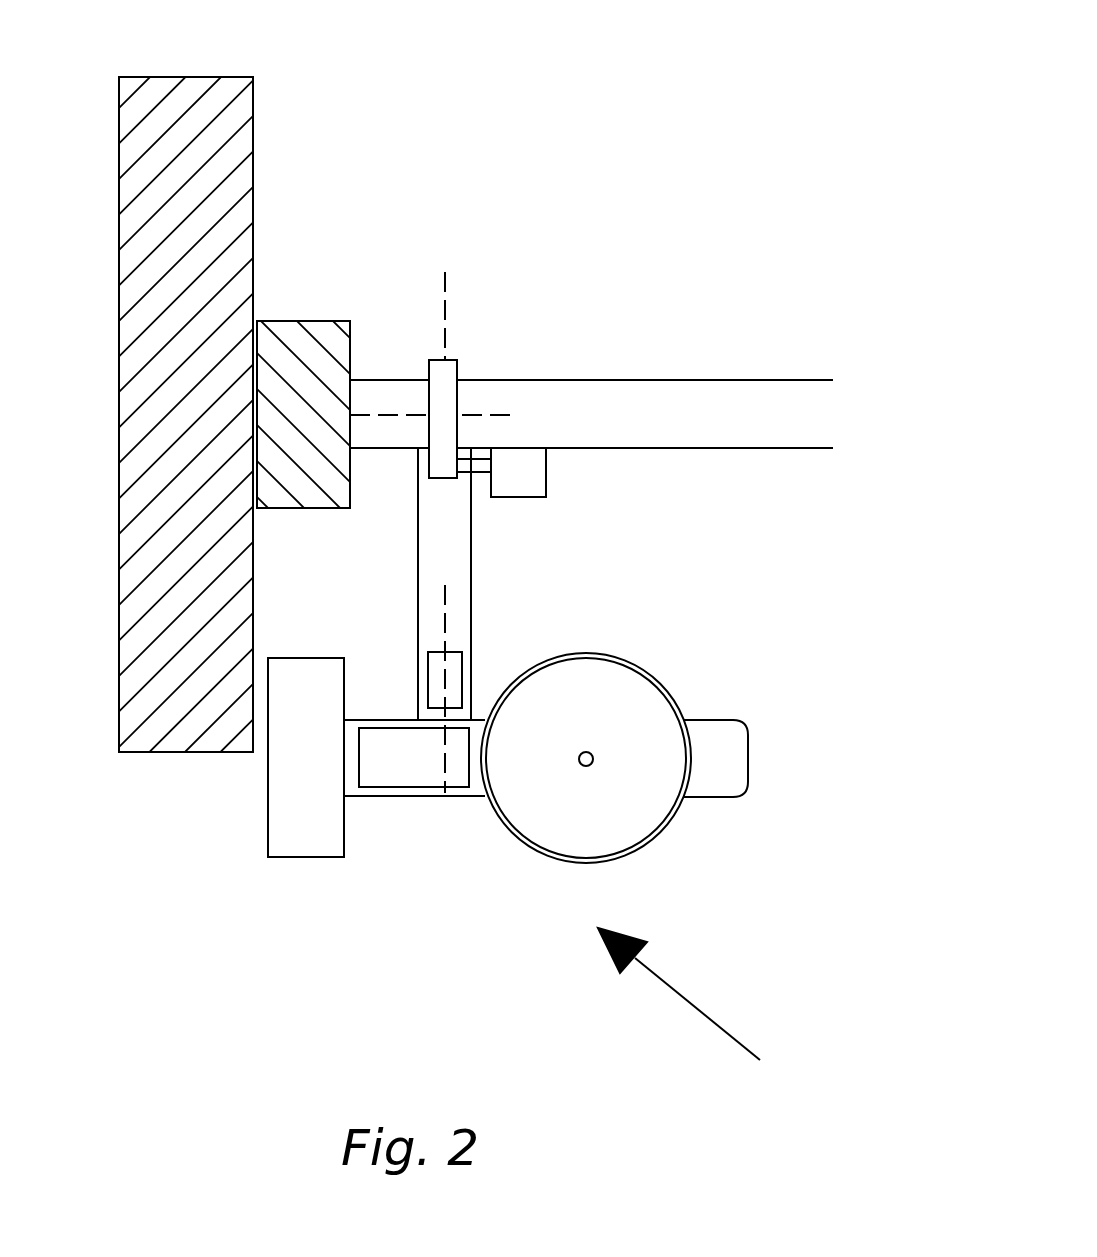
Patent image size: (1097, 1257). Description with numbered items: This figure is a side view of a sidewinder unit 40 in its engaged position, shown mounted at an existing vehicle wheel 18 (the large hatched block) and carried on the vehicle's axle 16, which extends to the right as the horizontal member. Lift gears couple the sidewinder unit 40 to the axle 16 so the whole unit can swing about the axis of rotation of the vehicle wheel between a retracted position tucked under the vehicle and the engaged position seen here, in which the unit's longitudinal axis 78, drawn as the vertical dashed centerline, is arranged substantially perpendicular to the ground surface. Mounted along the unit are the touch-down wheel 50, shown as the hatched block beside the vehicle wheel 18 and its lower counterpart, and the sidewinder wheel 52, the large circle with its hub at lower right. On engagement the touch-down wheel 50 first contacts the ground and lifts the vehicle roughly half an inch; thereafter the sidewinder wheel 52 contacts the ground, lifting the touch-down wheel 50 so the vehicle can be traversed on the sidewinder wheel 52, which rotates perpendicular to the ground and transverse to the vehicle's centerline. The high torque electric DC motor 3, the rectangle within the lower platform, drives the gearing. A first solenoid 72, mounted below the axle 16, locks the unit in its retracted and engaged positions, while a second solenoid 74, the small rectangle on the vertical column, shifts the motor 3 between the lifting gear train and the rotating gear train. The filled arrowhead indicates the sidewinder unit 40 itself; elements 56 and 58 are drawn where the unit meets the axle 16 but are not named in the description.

The existing vehicle wheel 18 is at (155, 125).
The axle 16 is at (666, 423).
The touch-down wheel 50 is at (299, 485).
The bore 56 is at (390, 415).
The pin 58 is at (450, 408).
The first solenoid 72 is at (550, 465).
The second solenoid 74 is at (459, 669).
The longitudinal axis 78 is at (447, 282).
The high torque electric DC motor 3 is at (418, 762).
The sidewinder wheel 52 is at (599, 773).
The sidewinder unit 40 is at (706, 1007).